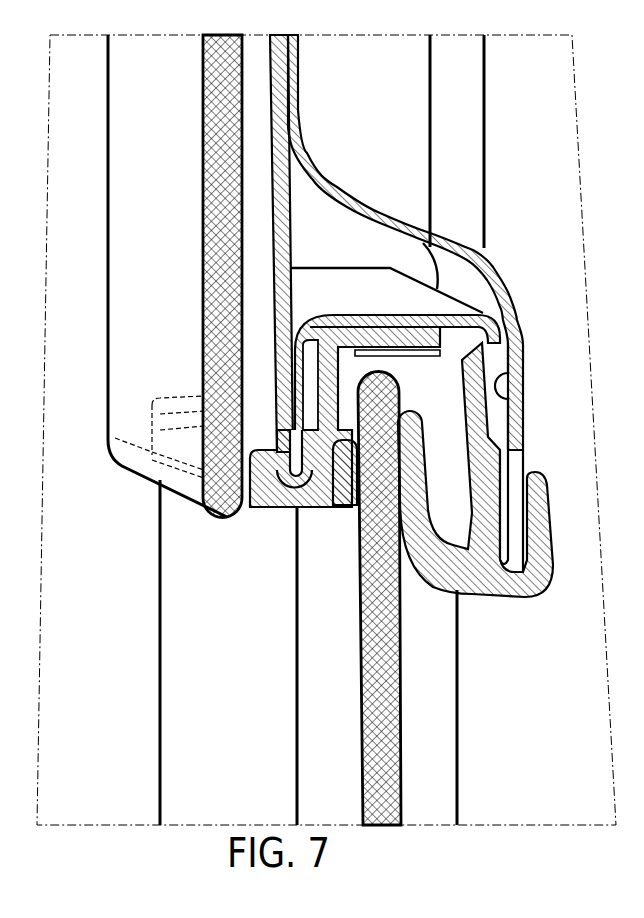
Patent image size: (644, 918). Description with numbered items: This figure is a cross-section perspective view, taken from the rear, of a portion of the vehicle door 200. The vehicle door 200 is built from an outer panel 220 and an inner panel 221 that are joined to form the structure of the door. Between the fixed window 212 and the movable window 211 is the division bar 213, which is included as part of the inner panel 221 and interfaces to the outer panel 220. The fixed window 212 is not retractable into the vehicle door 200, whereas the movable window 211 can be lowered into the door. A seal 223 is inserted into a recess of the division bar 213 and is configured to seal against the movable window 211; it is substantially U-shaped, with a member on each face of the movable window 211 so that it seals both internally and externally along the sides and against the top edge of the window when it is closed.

The vehicle door 200 is at (545, 87).
The movable window 211 is at (346, 696).
The fixed window 212 is at (200, 181).
The division bar 213 is at (375, 304).
The outer panel 220 is at (112, 682).
The inner panel 221 is at (375, 126).
The seal 223 is at (187, 585).